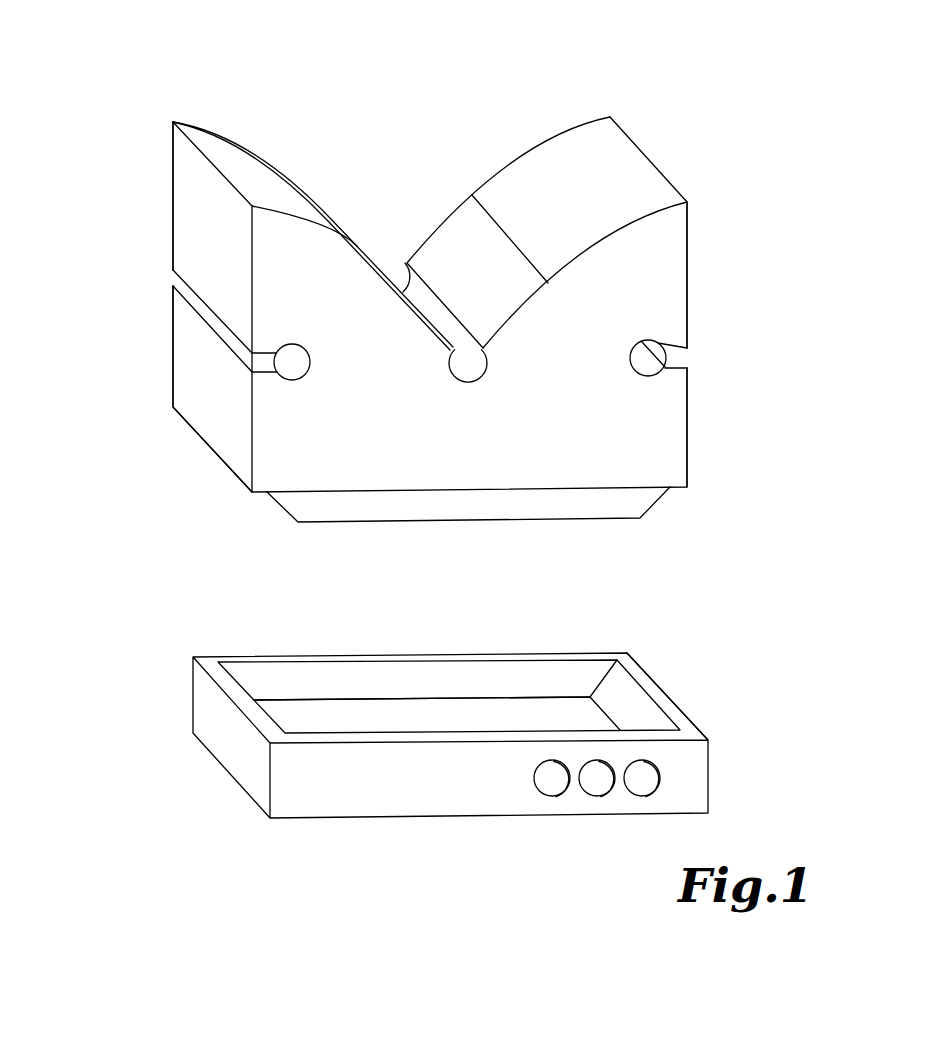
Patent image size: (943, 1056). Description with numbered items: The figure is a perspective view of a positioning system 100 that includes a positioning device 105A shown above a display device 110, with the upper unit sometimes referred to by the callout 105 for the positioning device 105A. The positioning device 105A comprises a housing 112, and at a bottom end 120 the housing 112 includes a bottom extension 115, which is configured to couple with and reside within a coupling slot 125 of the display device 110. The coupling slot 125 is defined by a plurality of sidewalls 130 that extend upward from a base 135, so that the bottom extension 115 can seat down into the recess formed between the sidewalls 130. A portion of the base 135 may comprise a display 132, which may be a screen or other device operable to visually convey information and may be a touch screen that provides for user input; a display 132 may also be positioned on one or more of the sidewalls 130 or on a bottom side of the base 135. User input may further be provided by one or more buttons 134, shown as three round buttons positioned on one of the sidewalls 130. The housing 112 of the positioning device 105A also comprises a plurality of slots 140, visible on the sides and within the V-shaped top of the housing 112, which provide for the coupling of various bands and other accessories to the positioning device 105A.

The positioning system 100 is at (414, 291).
The V-shaped groove 105 is at (192, 90).
The positioning device 105A is at (158, 124).
The display device 110 is at (395, 716).
The housing 112 is at (690, 263).
The bottom extension 115 is at (295, 502).
The bottom end 120 is at (243, 460).
The coupling slot 125 is at (311, 641).
The sidewalls 130 is at (623, 655).
The display 132 is at (427, 707).
The buttons 134 is at (578, 832).
The base 135 is at (353, 707).
The slots 140 is at (160, 278).